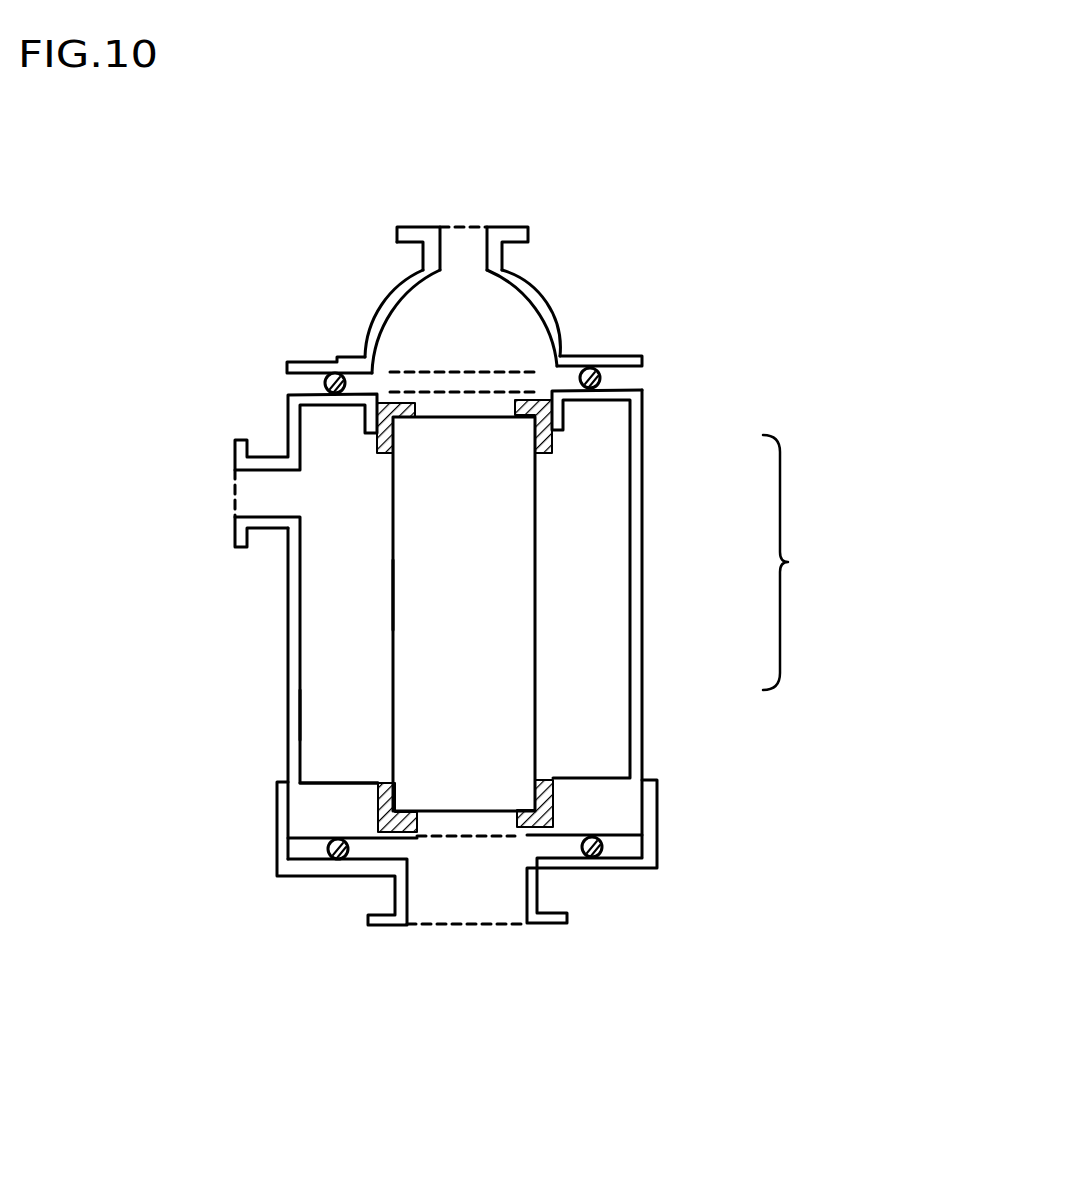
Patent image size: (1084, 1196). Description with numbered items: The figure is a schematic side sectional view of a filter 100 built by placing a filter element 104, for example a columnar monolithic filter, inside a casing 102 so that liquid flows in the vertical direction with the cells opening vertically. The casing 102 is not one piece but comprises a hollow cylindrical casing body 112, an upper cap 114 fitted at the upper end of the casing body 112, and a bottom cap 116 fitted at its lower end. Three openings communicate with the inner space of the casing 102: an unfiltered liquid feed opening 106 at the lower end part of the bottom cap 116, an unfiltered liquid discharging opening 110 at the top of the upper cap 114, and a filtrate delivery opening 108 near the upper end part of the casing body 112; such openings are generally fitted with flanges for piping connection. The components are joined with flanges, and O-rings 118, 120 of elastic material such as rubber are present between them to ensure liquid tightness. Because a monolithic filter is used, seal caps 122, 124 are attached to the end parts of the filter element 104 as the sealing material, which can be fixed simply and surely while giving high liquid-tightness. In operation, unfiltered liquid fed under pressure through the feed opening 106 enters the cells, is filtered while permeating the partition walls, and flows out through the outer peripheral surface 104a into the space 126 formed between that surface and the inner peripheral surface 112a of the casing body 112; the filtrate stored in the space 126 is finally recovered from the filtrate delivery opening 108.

The filter 100 is at (735, 158).
The casing 102 is at (801, 562).
The filter element 104 is at (407, 650).
The outer peripheral surface 104a is at (385, 594).
The unfiltered liquid feed opening 106 is at (485, 928).
The filtrate delivery opening 108 is at (214, 496).
The unfiltered liquid discharging opening 110 is at (461, 209).
The casing body 112 is at (633, 570).
The inner peripheral surface 112a is at (304, 713).
The upper cap 114 is at (643, 363).
The bottom cap 116 is at (658, 780).
The O-ring 118 is at (333, 372).
The O-ring 120 is at (333, 860).
The seal cap 122 is at (390, 407).
The seal cap 124 is at (383, 818).
The space 126 is at (335, 764).